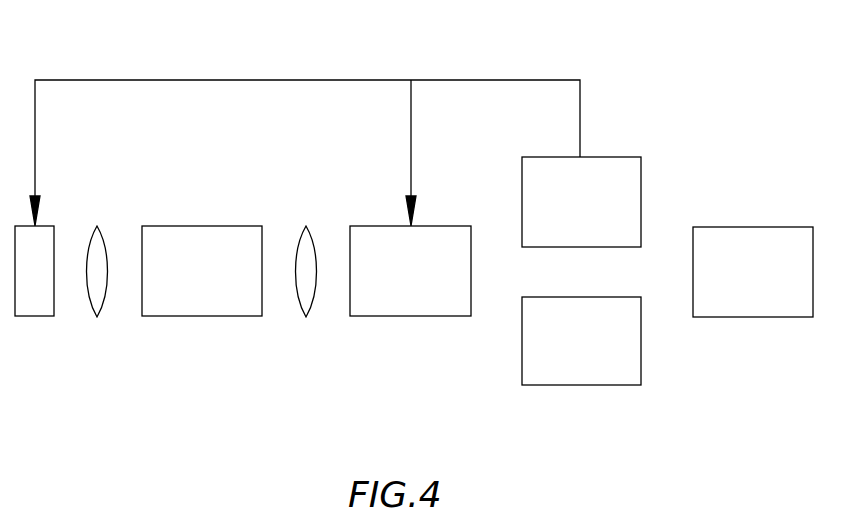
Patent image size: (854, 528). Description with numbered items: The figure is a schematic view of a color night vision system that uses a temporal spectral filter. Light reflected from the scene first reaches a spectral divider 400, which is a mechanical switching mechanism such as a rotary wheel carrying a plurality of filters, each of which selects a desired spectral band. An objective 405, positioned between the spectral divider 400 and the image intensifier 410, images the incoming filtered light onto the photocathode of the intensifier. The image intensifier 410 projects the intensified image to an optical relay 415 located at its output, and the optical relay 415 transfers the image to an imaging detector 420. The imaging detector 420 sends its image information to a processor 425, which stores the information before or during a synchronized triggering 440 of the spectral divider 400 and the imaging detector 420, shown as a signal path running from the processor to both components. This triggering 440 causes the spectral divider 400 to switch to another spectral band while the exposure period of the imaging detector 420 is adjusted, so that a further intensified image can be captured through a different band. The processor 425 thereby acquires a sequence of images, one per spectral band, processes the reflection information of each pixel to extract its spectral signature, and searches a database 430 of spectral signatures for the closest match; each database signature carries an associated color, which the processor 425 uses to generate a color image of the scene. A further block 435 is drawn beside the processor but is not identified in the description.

The spectral divider 400 is at (28, 316).
The objective 405 is at (97, 226).
The image intensifier 410 is at (177, 316).
The optical relay 415 is at (306, 226).
The imaging detector 420 is at (383, 316).
The processor 425 is at (605, 157).
The database 430 is at (553, 385).
The output device 435 is at (728, 227).
The triggering 440 is at (488, 79).